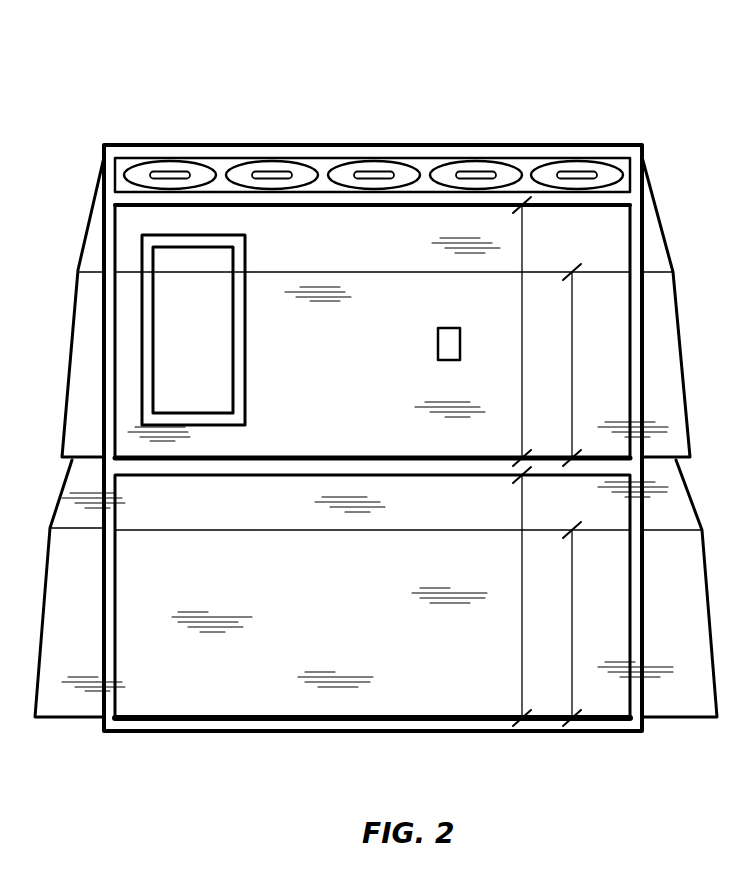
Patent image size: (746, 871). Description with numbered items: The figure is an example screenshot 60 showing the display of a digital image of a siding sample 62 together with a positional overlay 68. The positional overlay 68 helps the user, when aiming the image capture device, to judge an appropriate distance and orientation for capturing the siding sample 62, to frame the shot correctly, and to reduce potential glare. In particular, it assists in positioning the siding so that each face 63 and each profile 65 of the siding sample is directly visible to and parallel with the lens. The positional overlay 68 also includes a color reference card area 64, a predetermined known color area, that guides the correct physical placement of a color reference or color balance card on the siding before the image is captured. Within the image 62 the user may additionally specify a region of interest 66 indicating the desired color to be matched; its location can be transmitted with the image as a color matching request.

The screenshot 60 is at (376, 391).
The siding sample 62 is at (620, 250).
The face 63 is at (573, 340).
The color reference card area 64 is at (212, 262).
The profile 65 is at (523, 238).
The region of interest 66 is at (452, 328).
The positional overlay 68 is at (607, 724).